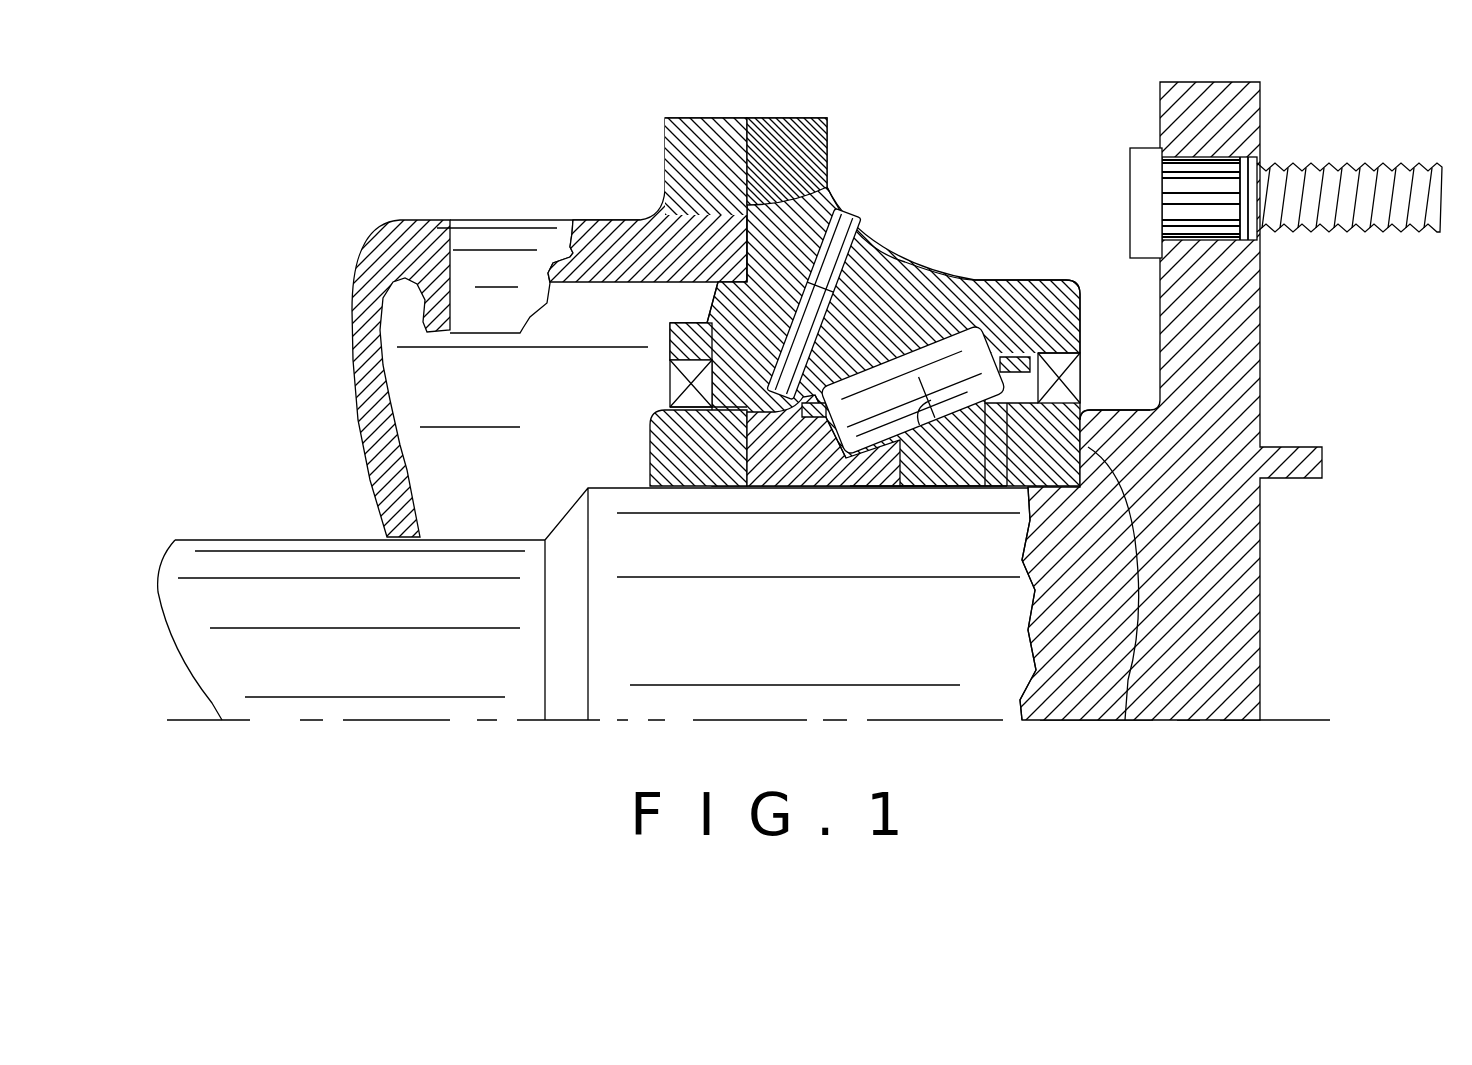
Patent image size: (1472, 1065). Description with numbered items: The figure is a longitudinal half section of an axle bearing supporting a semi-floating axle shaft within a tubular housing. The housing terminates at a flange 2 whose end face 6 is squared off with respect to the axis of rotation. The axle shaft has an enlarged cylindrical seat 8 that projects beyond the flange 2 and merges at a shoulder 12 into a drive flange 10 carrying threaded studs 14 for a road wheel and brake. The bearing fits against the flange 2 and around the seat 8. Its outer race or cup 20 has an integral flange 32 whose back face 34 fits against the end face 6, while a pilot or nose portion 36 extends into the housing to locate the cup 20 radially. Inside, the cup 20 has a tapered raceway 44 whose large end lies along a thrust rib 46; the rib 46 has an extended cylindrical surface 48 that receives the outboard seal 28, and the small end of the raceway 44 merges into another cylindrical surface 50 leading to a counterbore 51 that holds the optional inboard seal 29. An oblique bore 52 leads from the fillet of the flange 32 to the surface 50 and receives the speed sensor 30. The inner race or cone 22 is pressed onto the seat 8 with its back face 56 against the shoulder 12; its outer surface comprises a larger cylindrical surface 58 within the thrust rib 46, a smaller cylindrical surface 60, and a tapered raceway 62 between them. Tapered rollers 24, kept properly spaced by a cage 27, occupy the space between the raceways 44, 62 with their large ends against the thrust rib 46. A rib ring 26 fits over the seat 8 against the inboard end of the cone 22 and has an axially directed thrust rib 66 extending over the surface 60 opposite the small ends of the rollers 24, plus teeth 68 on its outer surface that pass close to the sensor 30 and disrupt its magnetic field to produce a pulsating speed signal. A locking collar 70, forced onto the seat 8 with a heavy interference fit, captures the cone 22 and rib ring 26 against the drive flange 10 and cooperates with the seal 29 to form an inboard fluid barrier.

The flange 2 is at (745, 205).
The end face 6 is at (750, 157).
The cylindrical seat 8 is at (940, 667).
The drive flange 10 is at (1223, 290).
The shoulder 12 is at (1126, 722).
The threaded studs 14 is at (1303, 166).
The outer race or cup 20 is at (922, 275).
The inner race or cone 22 is at (1020, 622).
The tapered rollers 24 is at (945, 450).
The rib ring 26 is at (737, 462).
The cage 27 is at (1007, 345).
The outboard seal 28 is at (1070, 373).
The inboard seal 29 is at (672, 400).
The speed sensor 30 is at (872, 290).
The flange 32 is at (803, 118).
The back face 34 is at (740, 200).
The pilot or nose portion 36 is at (728, 298).
The tapered raceway 44 is at (960, 330).
The thrust rib 46 is at (1042, 340).
The extended cylindrical surface 48 is at (1080, 357).
The extended cylindrical surface 50 is at (690, 385).
The counterbore 51 is at (668, 340).
The bore 52 is at (850, 233).
The back face 56 is at (1092, 440).
The cylindrical surface 58 is at (1082, 385).
The cylindrical surface 60 is at (838, 450).
The tapered raceway 62 is at (995, 445).
The thrust rib 66 is at (907, 447).
The teeth 68 is at (745, 392).
The locking collar 70 is at (660, 450).